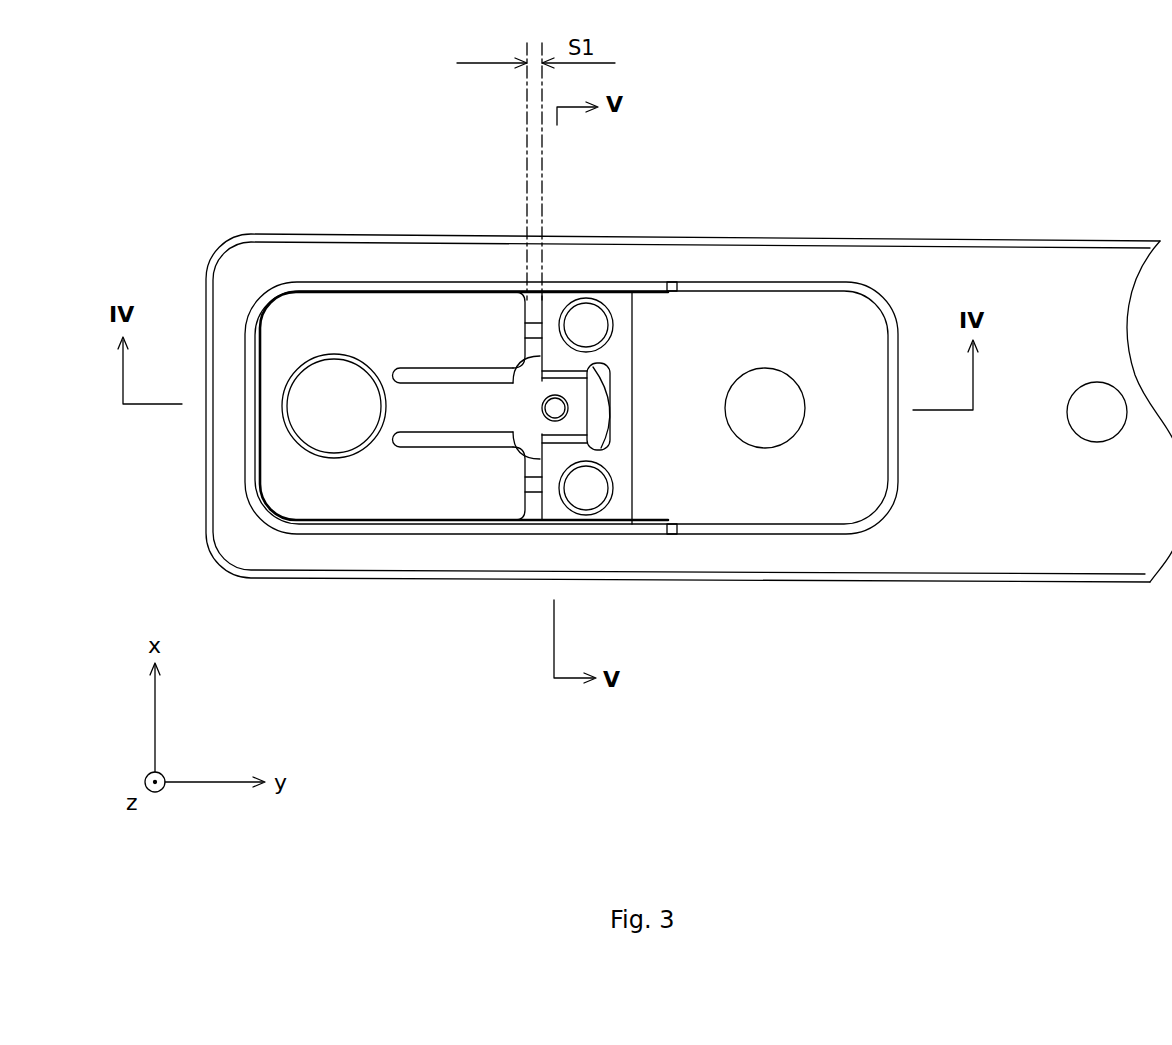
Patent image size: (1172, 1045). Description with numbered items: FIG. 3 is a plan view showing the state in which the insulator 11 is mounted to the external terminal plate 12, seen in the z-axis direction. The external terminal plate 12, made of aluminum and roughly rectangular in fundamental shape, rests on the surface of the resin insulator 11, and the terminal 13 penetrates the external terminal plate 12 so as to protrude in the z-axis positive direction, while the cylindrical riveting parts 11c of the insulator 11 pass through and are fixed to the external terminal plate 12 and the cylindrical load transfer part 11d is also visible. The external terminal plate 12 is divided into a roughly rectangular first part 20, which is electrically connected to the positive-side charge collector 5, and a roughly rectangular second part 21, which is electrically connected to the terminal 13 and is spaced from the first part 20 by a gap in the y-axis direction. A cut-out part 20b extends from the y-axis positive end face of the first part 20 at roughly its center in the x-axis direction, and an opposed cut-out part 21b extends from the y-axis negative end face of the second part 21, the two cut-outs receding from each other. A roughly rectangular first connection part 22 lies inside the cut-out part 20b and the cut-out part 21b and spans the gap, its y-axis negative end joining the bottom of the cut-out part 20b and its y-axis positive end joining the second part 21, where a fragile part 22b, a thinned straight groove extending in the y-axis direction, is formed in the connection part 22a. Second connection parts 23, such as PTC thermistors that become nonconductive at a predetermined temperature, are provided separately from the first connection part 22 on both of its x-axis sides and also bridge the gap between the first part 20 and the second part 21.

The positive-side charge collector 5 is at (335, 390).
The insulator 11 is at (789, 540).
The riveting part 11c is at (588, 325).
The load transfer part 11d is at (564, 511).
The external terminal plate 12 is at (483, 282).
The terminal 13 is at (770, 392).
The first part 20 is at (388, 288).
The cut-out part 20b is at (428, 374).
The second part 21 is at (723, 330).
The cut-out part 21b is at (612, 447).
The first connection part 22 is at (445, 436).
The connection part 22a is at (560, 371).
The fragile part 22b is at (564, 439).
The second connection part 23 is at (553, 421).